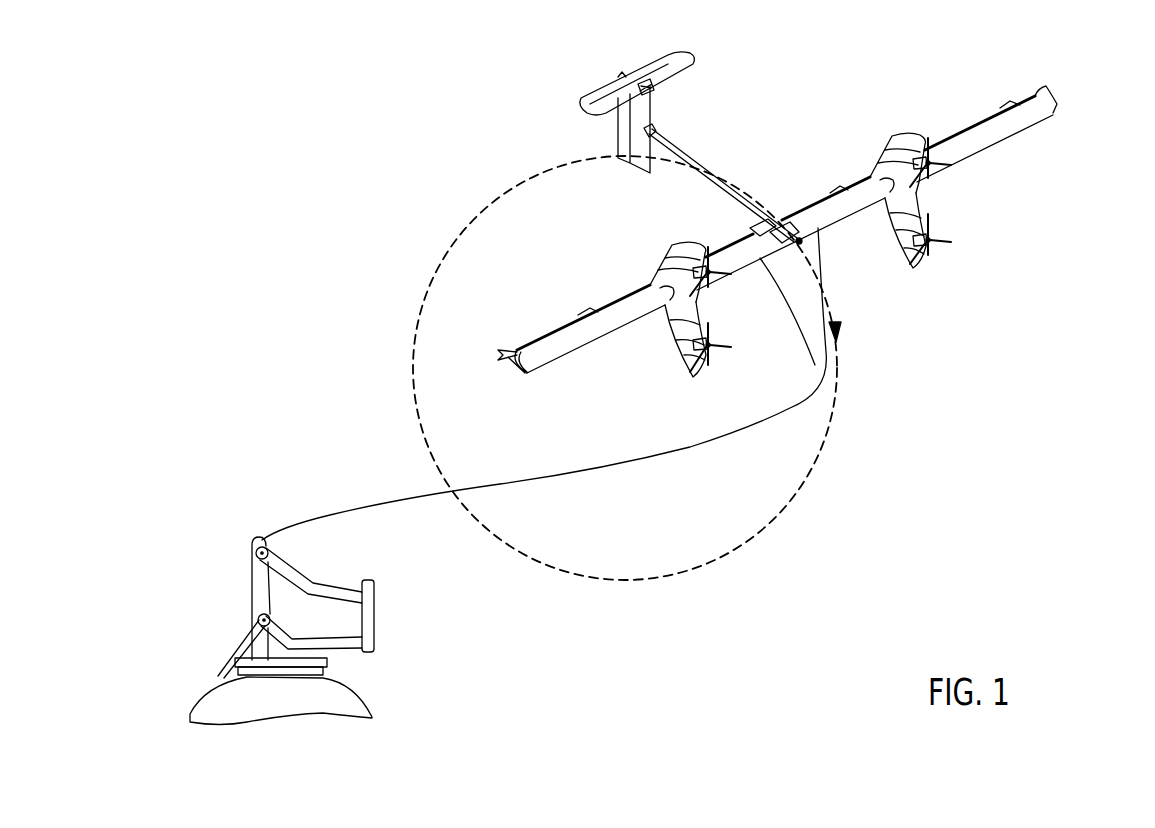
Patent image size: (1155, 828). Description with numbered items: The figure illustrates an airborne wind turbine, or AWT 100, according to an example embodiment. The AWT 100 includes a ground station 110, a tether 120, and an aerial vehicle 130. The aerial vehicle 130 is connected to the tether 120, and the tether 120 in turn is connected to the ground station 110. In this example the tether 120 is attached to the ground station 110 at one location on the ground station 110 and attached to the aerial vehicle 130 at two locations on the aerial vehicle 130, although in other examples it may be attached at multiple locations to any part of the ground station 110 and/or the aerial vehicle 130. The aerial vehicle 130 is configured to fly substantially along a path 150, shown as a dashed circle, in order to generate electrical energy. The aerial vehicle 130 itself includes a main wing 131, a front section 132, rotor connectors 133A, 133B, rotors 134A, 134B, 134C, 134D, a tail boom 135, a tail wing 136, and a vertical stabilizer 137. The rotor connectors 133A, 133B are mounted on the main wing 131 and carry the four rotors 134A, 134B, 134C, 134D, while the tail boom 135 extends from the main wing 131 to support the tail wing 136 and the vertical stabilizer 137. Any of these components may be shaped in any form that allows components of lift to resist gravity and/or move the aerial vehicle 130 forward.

The airborne wind turbine (AWT) 100 is at (251, 207).
The ground station 110 is at (260, 587).
The tether 120 is at (358, 506).
The aerial vehicle 130 is at (1128, 82).
The main wing 131 is at (834, 210).
The front section 132 is at (800, 246).
The rotor connector 133A is at (888, 142).
The rotor connector 133B is at (672, 247).
The rotor 134A is at (934, 172).
The rotor 134B is at (934, 248).
The rotor 134C is at (711, 278).
The rotor 134D is at (711, 352).
The tail boom 135 is at (704, 171).
The tail wing 136 is at (690, 54).
The vertical stabilizer 137 is at (641, 168).
The path 150 is at (464, 232).